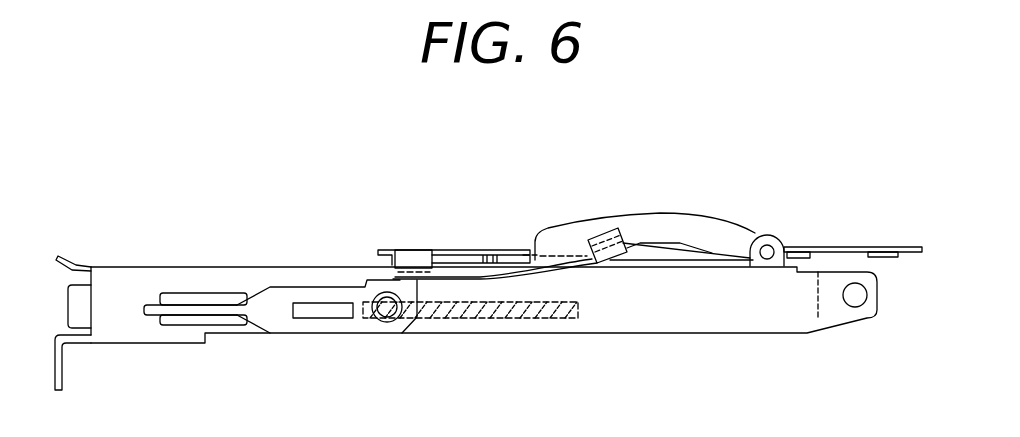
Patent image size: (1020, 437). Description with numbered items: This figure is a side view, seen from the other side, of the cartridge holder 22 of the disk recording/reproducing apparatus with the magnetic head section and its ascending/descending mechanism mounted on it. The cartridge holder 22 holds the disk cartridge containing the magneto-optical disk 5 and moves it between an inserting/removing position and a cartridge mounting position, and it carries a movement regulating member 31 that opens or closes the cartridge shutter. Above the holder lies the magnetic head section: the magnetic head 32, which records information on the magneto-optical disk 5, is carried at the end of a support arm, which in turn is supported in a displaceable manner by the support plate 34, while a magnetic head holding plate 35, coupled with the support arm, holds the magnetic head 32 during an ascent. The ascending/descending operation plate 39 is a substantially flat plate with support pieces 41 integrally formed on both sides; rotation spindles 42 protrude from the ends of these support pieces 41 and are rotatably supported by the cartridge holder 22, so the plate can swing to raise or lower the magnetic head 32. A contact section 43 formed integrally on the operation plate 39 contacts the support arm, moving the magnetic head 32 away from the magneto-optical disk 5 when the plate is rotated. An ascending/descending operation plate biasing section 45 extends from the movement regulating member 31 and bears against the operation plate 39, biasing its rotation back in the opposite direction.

The cartridge holder 22 is at (130, 285).
The movement regulating member 31 is at (270, 298).
The magneto-optical disk 5 is at (558, 312).
The magnetic head 32 is at (460, 250).
The magnetic head holding plate 35 is at (407, 257).
The contact section 43 is at (535, 253).
The ascending/descending operation plate 39 is at (667, 213).
The support pieces 41 is at (723, 237).
The rotation spindles 42 is at (768, 247).
The ascending/descending operation plate biasing section 45 is at (605, 228).
The support plate 34 is at (905, 247).